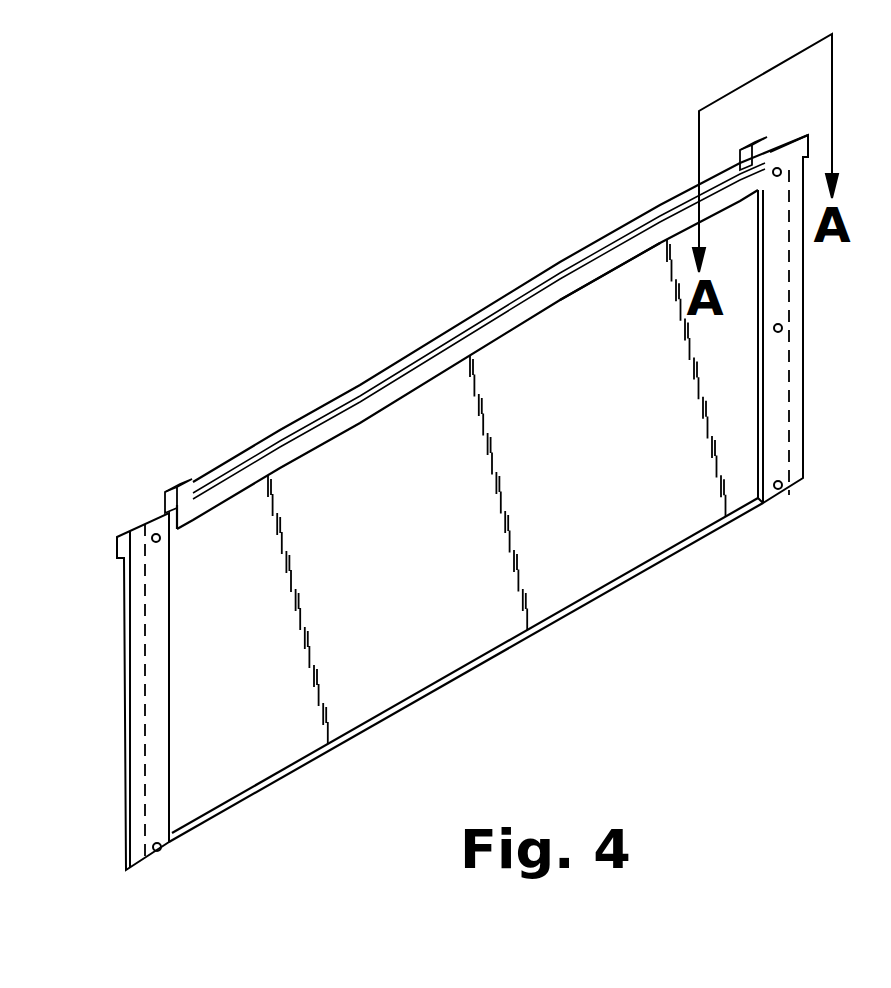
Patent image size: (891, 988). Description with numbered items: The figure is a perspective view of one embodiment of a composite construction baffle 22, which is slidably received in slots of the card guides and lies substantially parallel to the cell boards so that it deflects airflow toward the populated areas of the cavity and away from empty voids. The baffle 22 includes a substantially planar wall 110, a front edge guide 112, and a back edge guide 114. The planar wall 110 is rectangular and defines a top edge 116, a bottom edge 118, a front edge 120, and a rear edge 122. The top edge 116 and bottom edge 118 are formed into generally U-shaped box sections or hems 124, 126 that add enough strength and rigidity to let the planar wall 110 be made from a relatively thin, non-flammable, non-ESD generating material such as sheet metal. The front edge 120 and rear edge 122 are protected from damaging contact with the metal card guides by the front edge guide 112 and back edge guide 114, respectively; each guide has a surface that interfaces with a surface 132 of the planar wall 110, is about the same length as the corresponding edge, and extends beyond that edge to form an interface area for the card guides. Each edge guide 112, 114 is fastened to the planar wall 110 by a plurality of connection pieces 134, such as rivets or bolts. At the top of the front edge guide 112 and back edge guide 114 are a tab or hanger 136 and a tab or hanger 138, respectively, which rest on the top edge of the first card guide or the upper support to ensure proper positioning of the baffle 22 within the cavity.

The composite construction baffle 22 is at (330, 332).
The planar wall 110 is at (555, 572).
The front edge guide 112 is at (777, 430).
The back edge guide 114 is at (137, 807).
The top edge 116 is at (230, 465).
The bottom edge 118 is at (710, 533).
The front edge 120 is at (145, 620).
The rear edge 122 is at (790, 262).
The box section or hem 124 is at (447, 357).
The box section or hem 126 is at (415, 697).
The surface of planar wall 132 is at (618, 297).
The connection pieces 134 is at (781, 330).
The tab or hanger 136 is at (802, 137).
The tab or hanger 138 is at (117, 542).